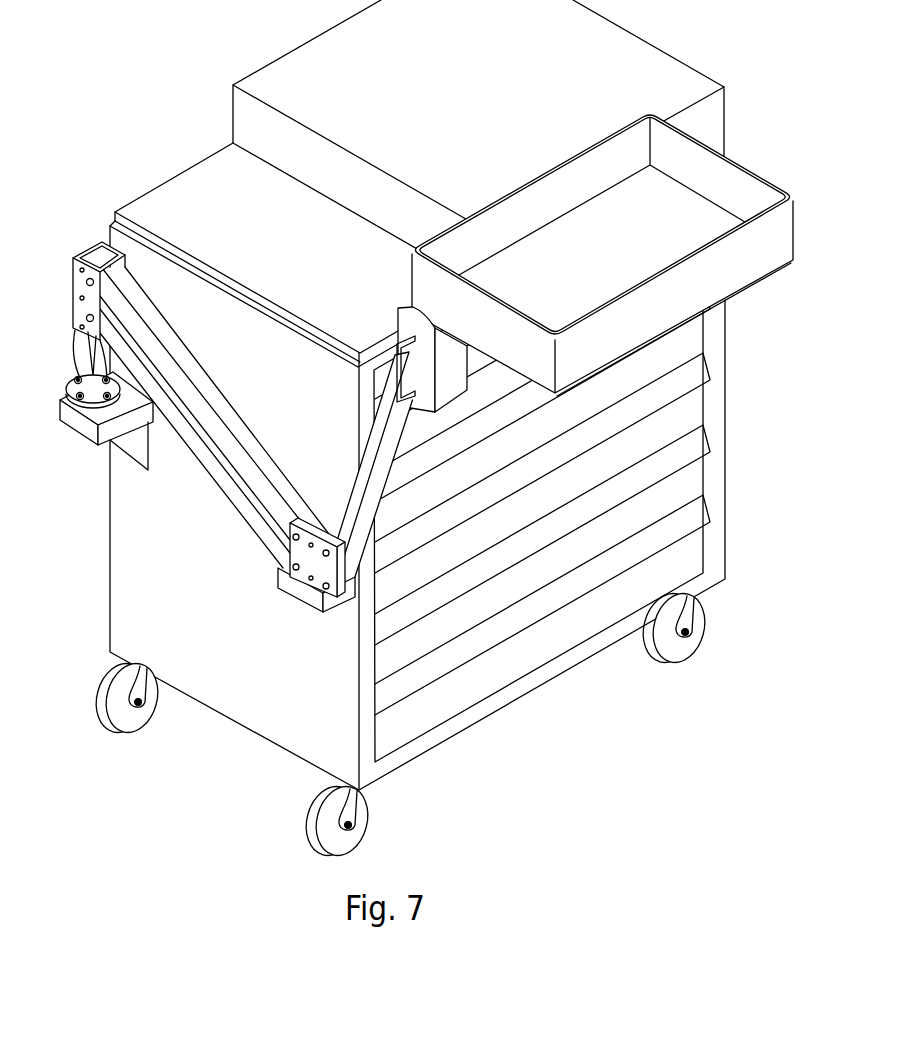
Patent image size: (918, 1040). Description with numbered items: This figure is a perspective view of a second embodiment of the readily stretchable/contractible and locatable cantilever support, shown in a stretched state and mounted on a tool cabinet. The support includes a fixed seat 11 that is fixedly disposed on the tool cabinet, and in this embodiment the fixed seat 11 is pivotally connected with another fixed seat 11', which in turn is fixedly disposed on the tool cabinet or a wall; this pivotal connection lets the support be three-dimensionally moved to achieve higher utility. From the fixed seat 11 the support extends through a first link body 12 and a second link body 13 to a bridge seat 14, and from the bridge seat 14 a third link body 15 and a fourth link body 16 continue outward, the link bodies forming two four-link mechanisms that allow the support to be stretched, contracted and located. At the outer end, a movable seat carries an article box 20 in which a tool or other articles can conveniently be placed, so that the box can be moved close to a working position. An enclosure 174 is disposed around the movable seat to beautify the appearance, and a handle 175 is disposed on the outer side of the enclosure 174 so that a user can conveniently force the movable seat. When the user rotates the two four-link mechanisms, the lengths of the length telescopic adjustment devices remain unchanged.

The fixed seat 11 is at (71, 256).
The other fixed seat 11' is at (79, 383).
The first link body 12 is at (158, 313).
The second link body 13 is at (353, 490).
The bridge seat 14 is at (300, 547).
The third link body 15 is at (207, 450).
The fourth link body 16 is at (391, 586).
The article box 20 is at (749, 165).
The enclosure 174 is at (492, 358).
The handle 175 is at (465, 370).